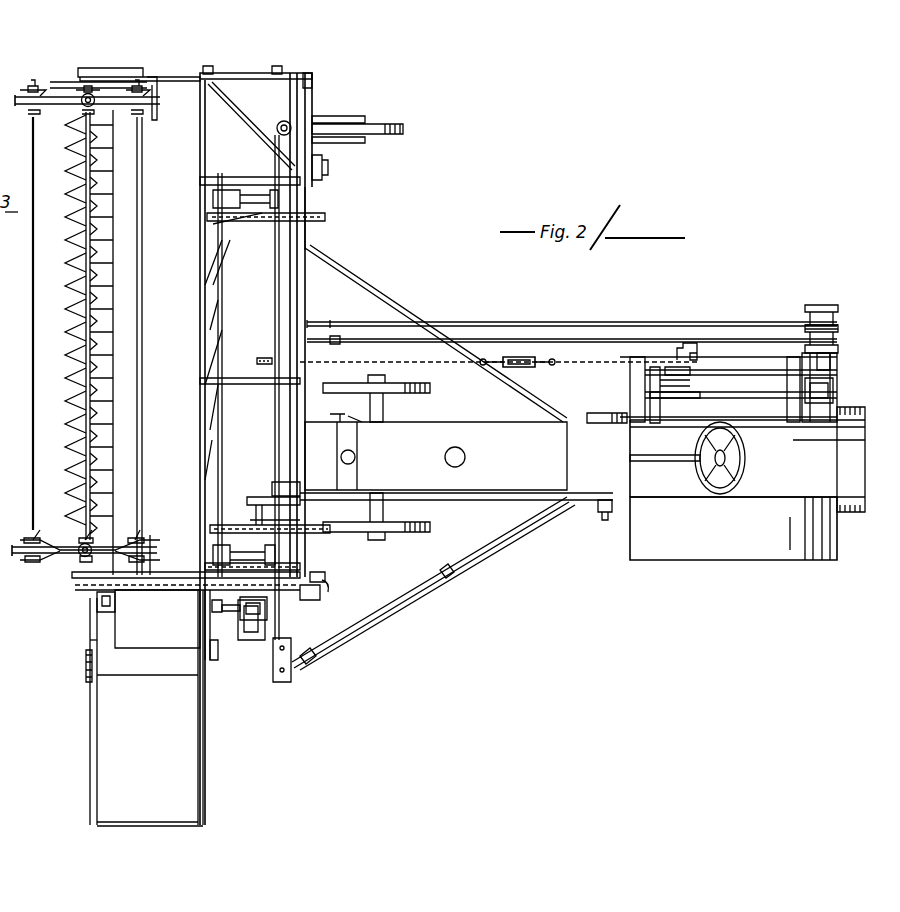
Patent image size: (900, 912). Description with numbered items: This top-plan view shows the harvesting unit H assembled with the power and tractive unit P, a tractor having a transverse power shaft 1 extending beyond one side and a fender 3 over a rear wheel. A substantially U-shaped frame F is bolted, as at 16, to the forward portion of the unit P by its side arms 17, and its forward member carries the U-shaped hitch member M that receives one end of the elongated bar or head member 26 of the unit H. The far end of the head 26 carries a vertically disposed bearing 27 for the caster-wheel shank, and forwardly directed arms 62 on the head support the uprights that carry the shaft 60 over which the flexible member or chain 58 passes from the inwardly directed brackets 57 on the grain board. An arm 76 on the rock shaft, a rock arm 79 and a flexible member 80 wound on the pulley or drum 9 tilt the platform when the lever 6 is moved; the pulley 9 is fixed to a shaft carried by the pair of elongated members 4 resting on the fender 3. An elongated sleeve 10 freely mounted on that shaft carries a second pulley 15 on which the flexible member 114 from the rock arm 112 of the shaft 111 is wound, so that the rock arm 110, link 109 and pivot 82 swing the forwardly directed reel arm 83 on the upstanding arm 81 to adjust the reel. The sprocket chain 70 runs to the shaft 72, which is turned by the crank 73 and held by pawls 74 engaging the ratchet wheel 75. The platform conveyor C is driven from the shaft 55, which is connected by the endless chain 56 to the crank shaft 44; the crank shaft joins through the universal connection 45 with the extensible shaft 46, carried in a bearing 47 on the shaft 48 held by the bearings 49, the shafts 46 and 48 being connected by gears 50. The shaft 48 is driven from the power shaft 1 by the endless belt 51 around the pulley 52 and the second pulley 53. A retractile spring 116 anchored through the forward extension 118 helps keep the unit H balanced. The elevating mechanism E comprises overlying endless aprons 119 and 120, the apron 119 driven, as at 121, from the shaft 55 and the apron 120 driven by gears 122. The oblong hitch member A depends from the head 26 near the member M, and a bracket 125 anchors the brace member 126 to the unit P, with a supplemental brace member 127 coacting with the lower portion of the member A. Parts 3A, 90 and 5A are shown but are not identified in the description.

The platform conveyor C is at (145, 310).
The forwardly directed elongated arm 83 is at (160, 68).
The pivotal connection 82 is at (208, 66).
The upstanding arm 81 is at (226, 78).
The link 109 is at (280, 70).
The rock arm 110 is at (310, 72).
The bar or head member 26 is at (276, 313).
The vertically disposed bearing 27 is at (280, 121).
The forwardly directed arms 62 is at (252, 192).
The inwardly directed brackets 57 is at (208, 216).
The flexible member or chain 58 is at (258, 225).
The bracket 3A is at (324, 163).
The harvesting unit H is at (318, 202).
The shaft 111 is at (318, 255).
The arm 76 is at (235, 387).
The shaft 60 is at (218, 342).
The hitch member M is at (277, 488).
The second pulley 53 is at (250, 498).
The bearings 49 is at (252, 520).
The shaft 48 is at (240, 528).
The retractile spring 116 is at (322, 585).
The forward extension 118 is at (320, 592).
The gears 50 is at (268, 610).
The bearing 47 is at (246, 622).
The oblong hitch member A is at (284, 680).
The base plate 90 is at (146, 580).
The endless apron 120 is at (174, 708).
The endless apron 119 is at (120, 672).
The elevating mechanism E is at (117, 765).
The crank shaft 44 is at (97, 610).
The gears 122 is at (86, 665).
The shaft 55 is at (92, 650).
The universal connection 45 is at (208, 606).
The endless chain 56 is at (212, 627).
The shaft 46 is at (232, 610).
The driven connection 121 is at (216, 664).
The bracket 125 is at (328, 630).
The supplemental brace member 127 is at (418, 592).
The brace member 126 is at (492, 535).
The U-shaped frame F is at (396, 436).
The bolts 16 is at (400, 416).
The side arms 17 is at (328, 420).
The plate 5A is at (395, 515).
The endless belt 51 is at (495, 493).
The pulley 52 is at (605, 520).
The rock arm 79 is at (330, 322).
The flexible member 80 is at (632, 322).
The flexible member 114 is at (493, 340).
The rock arm 112 is at (338, 342).
The sprocket chain 70 is at (575, 360).
The power and tractive unit P is at (590, 437).
The power shaft 1 is at (600, 490).
The fender 3 is at (750, 560).
The ratchet wheel 75 is at (662, 420).
The pawls 74 is at (686, 400).
The elongated members 4 is at (716, 385).
The shaft 72 is at (682, 380).
The crank 73 is at (688, 343).
The pulley 9 is at (832, 305).
The second pulley 15 is at (838, 330).
The elongated sleeve 10 is at (832, 355).
The lever 6 is at (835, 390).